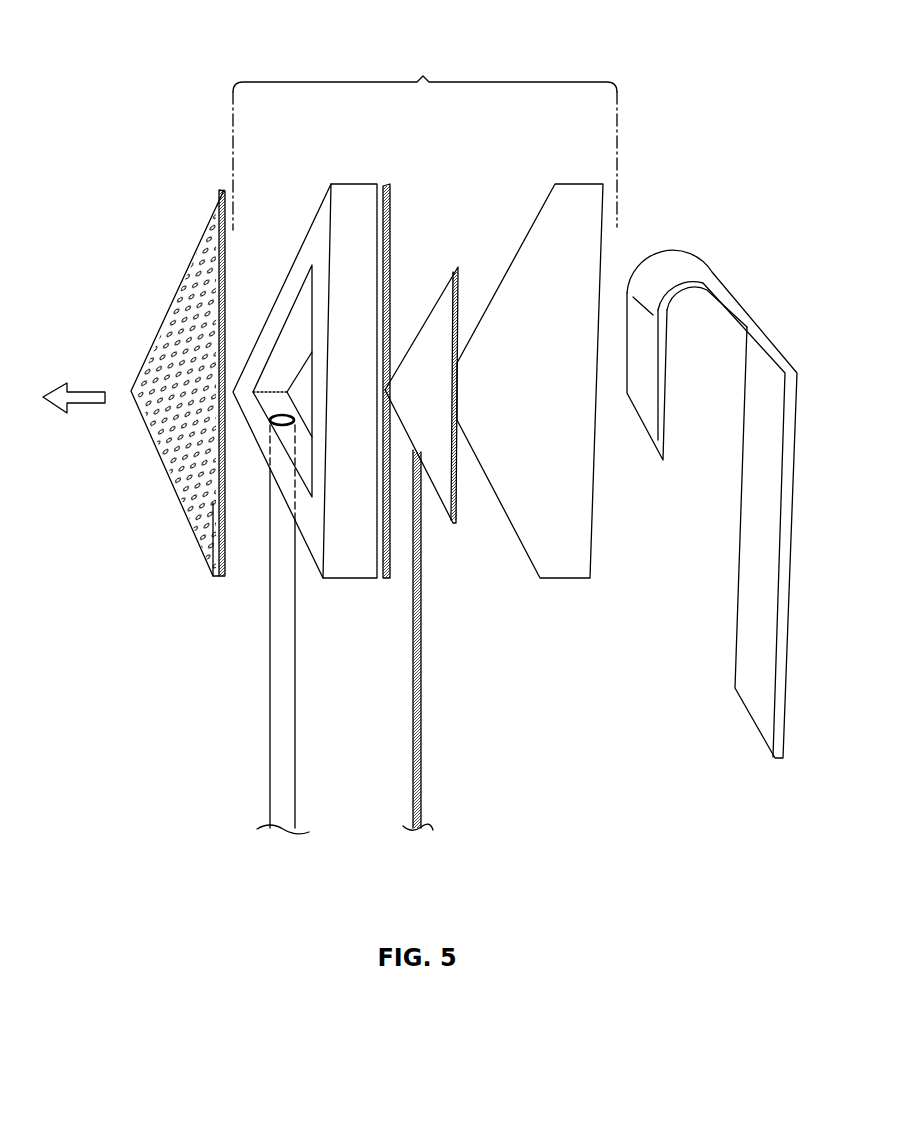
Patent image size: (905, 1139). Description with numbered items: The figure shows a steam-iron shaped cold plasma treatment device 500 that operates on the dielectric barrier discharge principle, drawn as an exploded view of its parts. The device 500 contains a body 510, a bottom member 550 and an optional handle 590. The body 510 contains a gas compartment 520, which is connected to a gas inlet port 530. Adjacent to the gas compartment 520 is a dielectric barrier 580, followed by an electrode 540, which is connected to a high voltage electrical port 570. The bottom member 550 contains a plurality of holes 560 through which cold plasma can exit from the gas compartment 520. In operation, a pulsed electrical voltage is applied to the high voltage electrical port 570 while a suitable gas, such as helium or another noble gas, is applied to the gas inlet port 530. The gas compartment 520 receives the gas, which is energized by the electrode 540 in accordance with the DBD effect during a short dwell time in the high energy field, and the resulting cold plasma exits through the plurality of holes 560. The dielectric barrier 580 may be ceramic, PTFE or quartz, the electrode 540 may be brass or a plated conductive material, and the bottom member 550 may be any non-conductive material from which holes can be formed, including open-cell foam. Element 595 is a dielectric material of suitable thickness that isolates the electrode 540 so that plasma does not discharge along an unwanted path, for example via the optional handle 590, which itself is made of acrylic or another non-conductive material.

The cold plasma treatment device 500 is at (138, 48).
The body 510 is at (425, 135).
The gas compartment 520 is at (347, 580).
The gas inlet port 530 is at (283, 733).
The electrode 540 is at (452, 525).
The bottom member 550 is at (197, 533).
The plurality of holes 560 is at (177, 450).
The high voltage electrical port 570 is at (413, 718).
The dielectric barrier 580 is at (392, 205).
The optional handle 590 is at (697, 262).
The element 595 is at (563, 583).